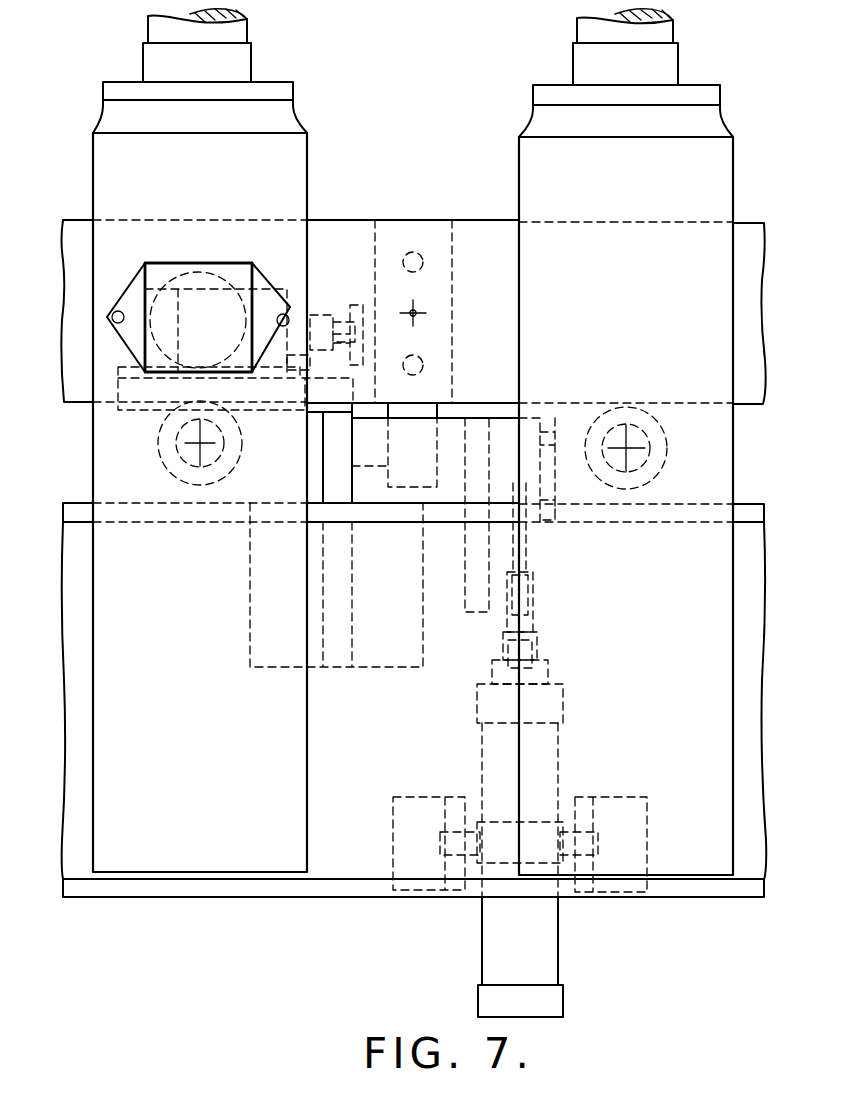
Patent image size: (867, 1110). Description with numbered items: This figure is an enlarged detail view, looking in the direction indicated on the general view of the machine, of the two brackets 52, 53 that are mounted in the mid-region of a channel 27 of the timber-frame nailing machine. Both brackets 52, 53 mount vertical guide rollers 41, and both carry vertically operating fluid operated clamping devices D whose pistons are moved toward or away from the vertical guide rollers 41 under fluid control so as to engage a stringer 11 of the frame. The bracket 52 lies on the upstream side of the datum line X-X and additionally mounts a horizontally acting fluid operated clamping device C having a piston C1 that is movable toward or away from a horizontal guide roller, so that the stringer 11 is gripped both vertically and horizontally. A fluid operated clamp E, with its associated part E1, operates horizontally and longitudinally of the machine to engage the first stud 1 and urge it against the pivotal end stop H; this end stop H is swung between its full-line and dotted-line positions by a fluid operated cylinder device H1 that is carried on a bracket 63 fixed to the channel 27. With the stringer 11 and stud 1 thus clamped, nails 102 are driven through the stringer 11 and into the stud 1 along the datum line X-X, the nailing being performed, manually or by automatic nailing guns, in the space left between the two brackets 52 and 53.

The stringer 11 is at (75, 219).
The channel 27 is at (78, 853).
The bracket 52 is at (209, 840).
The bracket 53 is at (682, 848).
The fluid operated clamping device D is at (227, 58).
The fluid operated clamping device C is at (137, 277).
The piston C1 is at (200, 347).
The fluid operated clamp E is at (317, 310).
The actuator pin E1 is at (355, 343).
The datum line X-X is at (412, 310).
The nails 102 is at (421, 270).
The stud 1 is at (435, 389).
The end stop H is at (466, 600).
The fluid operated cylinder device H1 is at (533, 760).
The bracket 63 is at (607, 813).
The vertical guide rollers 41 is at (194, 486).